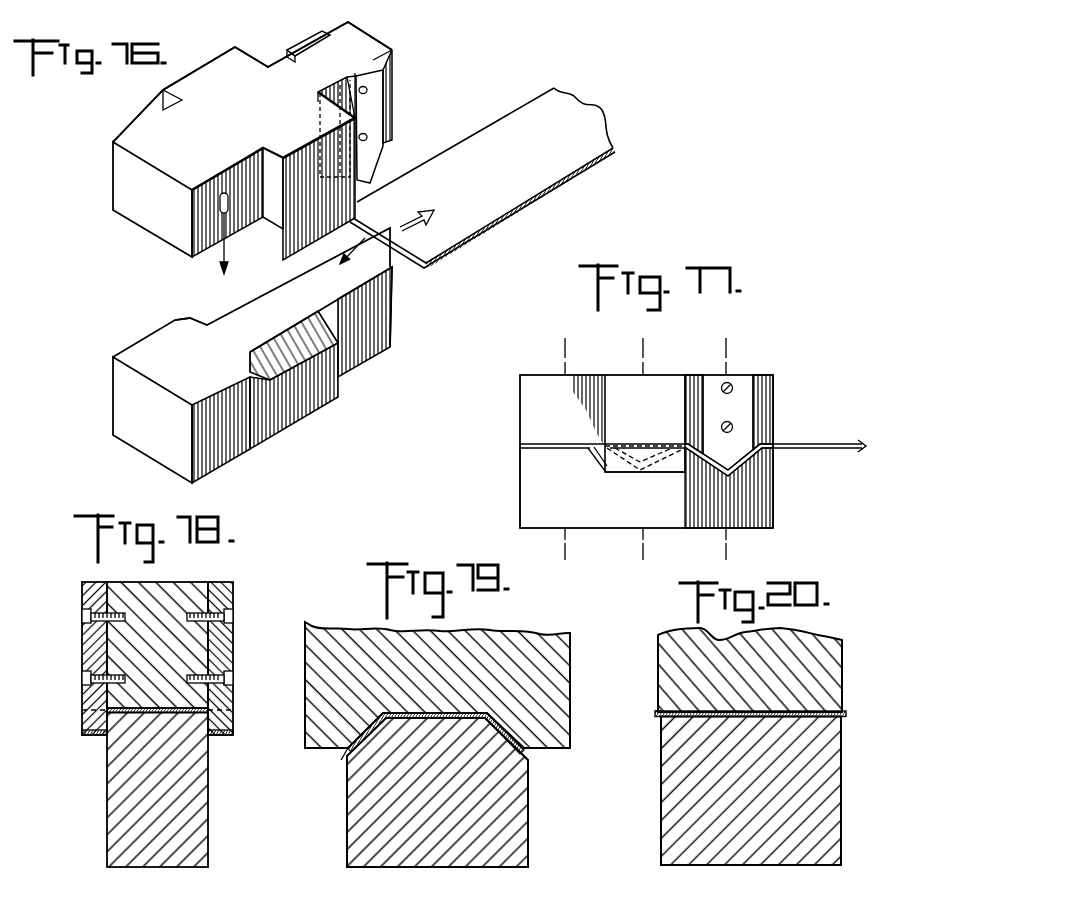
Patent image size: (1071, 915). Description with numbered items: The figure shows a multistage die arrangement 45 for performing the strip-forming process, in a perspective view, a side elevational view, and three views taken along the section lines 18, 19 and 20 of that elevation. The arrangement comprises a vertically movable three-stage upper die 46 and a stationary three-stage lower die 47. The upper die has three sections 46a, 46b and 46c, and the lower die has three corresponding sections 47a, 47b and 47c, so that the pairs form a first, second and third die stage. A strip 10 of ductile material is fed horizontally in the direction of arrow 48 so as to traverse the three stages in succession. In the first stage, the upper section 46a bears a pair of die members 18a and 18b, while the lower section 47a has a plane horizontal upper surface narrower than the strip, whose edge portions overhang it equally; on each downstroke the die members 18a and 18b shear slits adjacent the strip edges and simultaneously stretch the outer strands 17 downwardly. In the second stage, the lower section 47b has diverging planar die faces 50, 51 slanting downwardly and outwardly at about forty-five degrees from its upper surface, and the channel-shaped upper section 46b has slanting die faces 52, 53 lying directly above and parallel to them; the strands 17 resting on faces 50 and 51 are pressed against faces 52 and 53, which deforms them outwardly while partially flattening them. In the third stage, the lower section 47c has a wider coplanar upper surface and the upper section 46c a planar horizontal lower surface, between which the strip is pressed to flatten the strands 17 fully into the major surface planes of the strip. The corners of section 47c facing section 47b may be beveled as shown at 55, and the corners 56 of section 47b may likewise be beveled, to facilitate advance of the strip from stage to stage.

In FIG. 16, the strip 10 is at (568, 158).
In FIG. 17, the strip 10 is at (840, 440).
In FIG. 18, the strip 10 is at (163, 713).
In FIG. 19, the strip 10 is at (440, 712).
In FIG. 20, the strip 10 is at (740, 715).
In FIG. 17, the strands 17 is at (733, 477).
In FIG. 18, the strands 17 is at (83, 733).
In FIG. 19, the strands 17 is at (350, 757).
In FIG. 20, the strands 17 is at (667, 707).
In FIG. 17, the section line 18— 18 is at (724, 348).
In FIG. 16, the die member 18a is at (309, 35).
In FIG. 18, the die member 18a is at (92, 580).
In FIG. 16, the die member 18b is at (378, 79).
In FIG. 17, the die member 18b is at (742, 383).
In FIG. 18, the die member 18b is at (222, 581).
In FIG. 17, the section line 19— 19 is at (641, 348).
In FIG. 17, the section line 20— 20 is at (563, 348).
In FIG. 16, the multistage die arrangement 45 is at (92, 213).
In FIG. 16, the upper die 46 is at (148, 127).
In FIG. 17, the upper die 46 is at (646, 451).
In FIG. 16, the upper die section 46a is at (352, 43).
In FIG. 17, the upper die section 46a is at (760, 394).
In FIG. 18, the upper die section 46a is at (183, 647).
In FIG. 16, the upper die section 46b is at (297, 137).
In FIG. 17, the upper die section 46b is at (668, 383).
In FIG. 19, the upper die section 46b is at (542, 655).
In FIG. 16, the upper die section 46c is at (202, 223).
In FIG. 17, the upper die section 46c is at (530, 406).
In FIG. 20, the upper die section 46c is at (830, 667).
In FIG. 16, the lower die 47 is at (127, 413).
In FIG. 17, the lower die 47 is at (626, 508).
In FIG. 16, the lower die section 47a is at (382, 327).
In FIG. 17, the lower die section 47a is at (767, 515).
In FIG. 18, the lower die section 47a is at (128, 815).
In FIG. 16, the lower die section 47b is at (310, 403).
In FIG. 17, the lower die section 47b is at (653, 512).
In FIG. 19, the lower die section 47b is at (517, 833).
In FIG. 16, the lower die section 47c is at (220, 460).
In FIG. 17, the lower die section 47c is at (523, 489).
In FIG. 20, the lower die section 47c is at (747, 853).
In FIG. 16, the arrow 48 is at (368, 236).
In FIG. 19, the die face 50 is at (387, 720).
In FIG. 16, the die face 51 is at (302, 348).
In FIG. 19, the die face 51 is at (513, 738).
In FIG. 19, the die face 52 is at (355, 735).
In FIG. 16, the die face 53 is at (256, 230).
In FIG. 19, the die face 53 is at (497, 720).
In FIG. 16, the beveled corners 55 is at (200, 320).
In FIG. 17, the beveled corners 55 is at (595, 461).
In FIG. 16, the beveled corners 56 is at (342, 294).